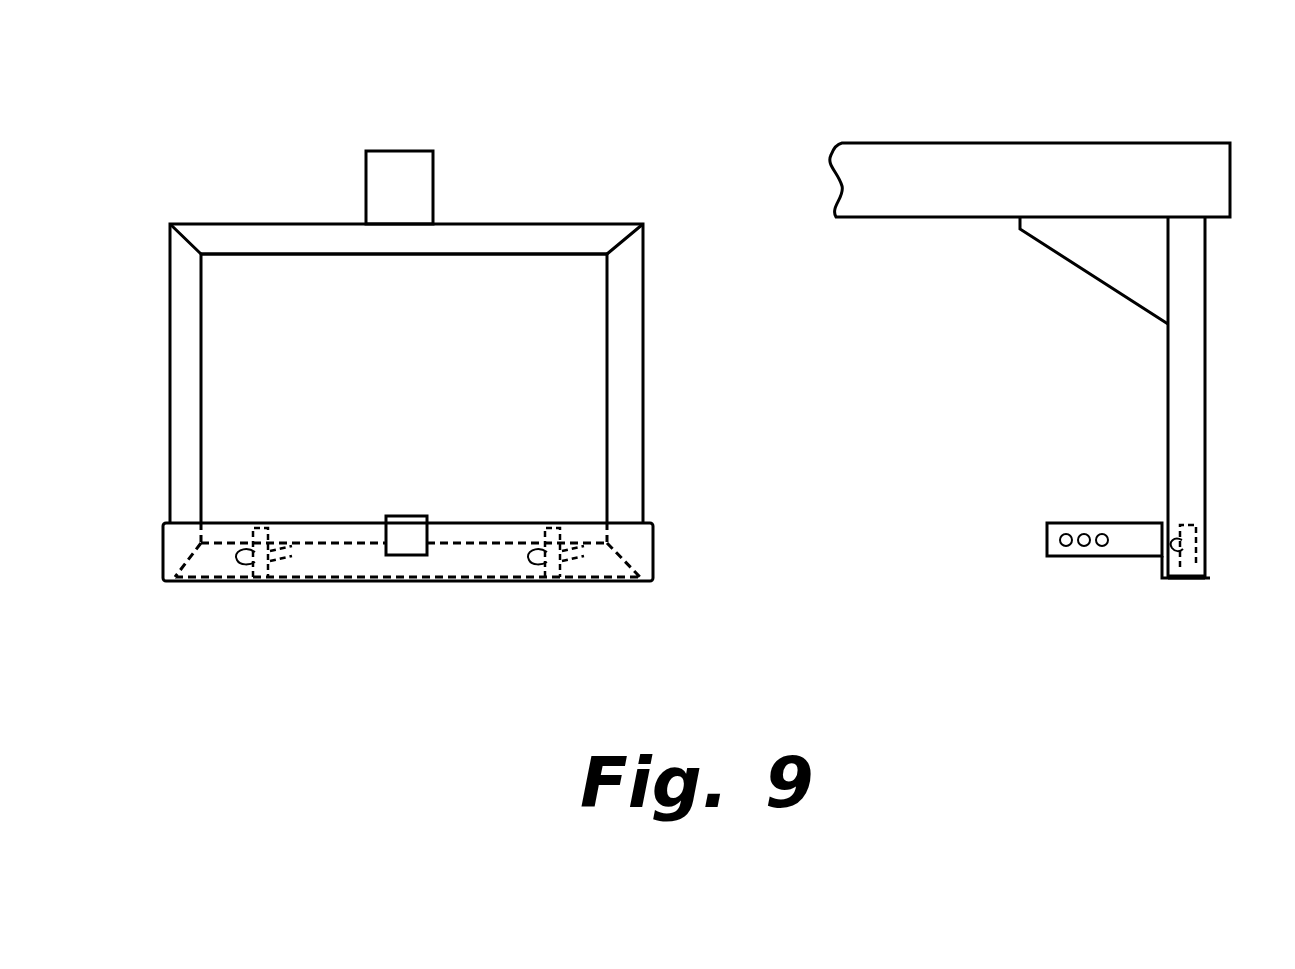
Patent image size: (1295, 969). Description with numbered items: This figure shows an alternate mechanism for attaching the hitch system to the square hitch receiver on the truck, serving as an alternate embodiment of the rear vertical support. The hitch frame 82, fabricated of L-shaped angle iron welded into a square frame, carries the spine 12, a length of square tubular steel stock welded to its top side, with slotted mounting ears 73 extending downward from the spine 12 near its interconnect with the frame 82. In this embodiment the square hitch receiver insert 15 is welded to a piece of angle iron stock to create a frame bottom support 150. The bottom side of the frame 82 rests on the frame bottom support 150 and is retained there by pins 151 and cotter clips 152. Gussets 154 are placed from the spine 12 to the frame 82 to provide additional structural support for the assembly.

The spine 12 is at (398, 170).
The slotted mounting ears 73 is at (365, 230).
The hitch frame 82 is at (220, 233).
The frame bottom support 150 is at (653, 563).
The pins 151 is at (553, 527).
The cotter clips 152 is at (538, 560).
The square hitch receiver insert 15 is at (412, 538).
The gussets 154 is at (1110, 268).